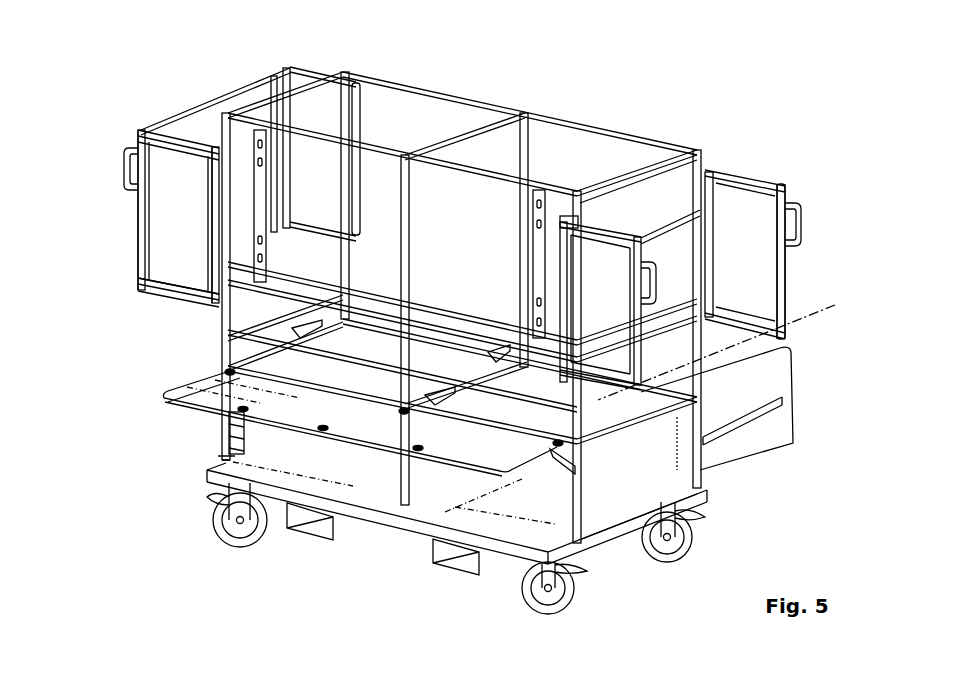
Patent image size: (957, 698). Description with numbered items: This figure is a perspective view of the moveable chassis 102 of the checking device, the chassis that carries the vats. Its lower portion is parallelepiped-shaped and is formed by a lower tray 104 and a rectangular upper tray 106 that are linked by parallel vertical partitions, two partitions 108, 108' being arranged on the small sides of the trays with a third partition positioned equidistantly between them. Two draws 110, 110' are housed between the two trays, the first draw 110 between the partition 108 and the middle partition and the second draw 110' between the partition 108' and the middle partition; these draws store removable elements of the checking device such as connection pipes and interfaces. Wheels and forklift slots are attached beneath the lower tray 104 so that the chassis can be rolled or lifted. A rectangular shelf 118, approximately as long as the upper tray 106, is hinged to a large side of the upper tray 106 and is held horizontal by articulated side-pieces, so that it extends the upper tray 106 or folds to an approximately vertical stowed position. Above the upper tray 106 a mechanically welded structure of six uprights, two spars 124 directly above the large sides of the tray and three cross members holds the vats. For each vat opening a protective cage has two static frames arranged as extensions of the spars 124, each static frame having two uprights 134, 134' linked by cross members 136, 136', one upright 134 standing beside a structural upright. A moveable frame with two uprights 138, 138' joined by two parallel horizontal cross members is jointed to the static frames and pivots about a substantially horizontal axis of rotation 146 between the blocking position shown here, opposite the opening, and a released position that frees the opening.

The moveable chassis 102 is at (77, 193).
The lower tray 104 is at (405, 522).
The upper tray 106 is at (603, 415).
The vertical partition 108 is at (639, 502).
The vertical partition 108' is at (197, 469).
The draw 110 is at (744, 408).
The draw 110' is at (253, 477).
The shelf 118 is at (173, 397).
The spar 124 is at (557, 193).
The upright 134 is at (196, 236).
The upright 134' is at (98, 210).
The cross member 136 is at (107, 169).
The cross member 136' is at (175, 307).
The upright 138 is at (662, 292).
The upright 138' is at (826, 236).
The axis of rotation 146 is at (833, 307).